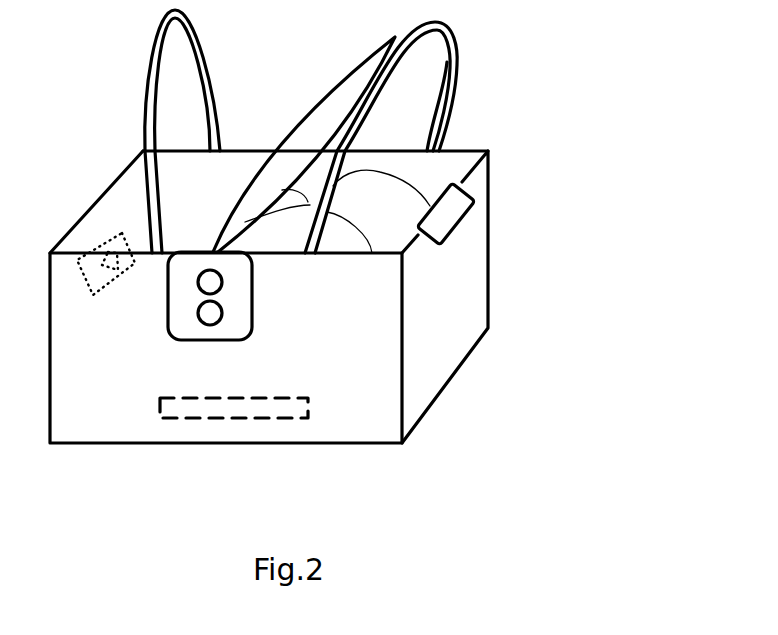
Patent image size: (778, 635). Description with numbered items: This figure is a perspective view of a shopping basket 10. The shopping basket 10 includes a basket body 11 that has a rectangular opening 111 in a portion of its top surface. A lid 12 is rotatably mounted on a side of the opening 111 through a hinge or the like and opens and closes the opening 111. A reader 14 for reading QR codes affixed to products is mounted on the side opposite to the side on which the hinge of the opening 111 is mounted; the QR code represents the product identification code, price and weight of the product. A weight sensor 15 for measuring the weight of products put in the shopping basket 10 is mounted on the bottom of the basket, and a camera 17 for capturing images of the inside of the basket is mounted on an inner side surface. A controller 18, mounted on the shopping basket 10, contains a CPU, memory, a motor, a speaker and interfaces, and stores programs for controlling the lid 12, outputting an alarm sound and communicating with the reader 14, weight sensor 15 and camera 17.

The shopping basket 10 is at (558, 103).
The basket body 11 is at (463, 367).
The rectangular opening 111 is at (465, 150).
The lid 12 is at (338, 92).
The reader 14 is at (460, 220).
The weight sensor 15 is at (228, 418).
The camera 17 is at (95, 247).
The controller 18 is at (183, 300).